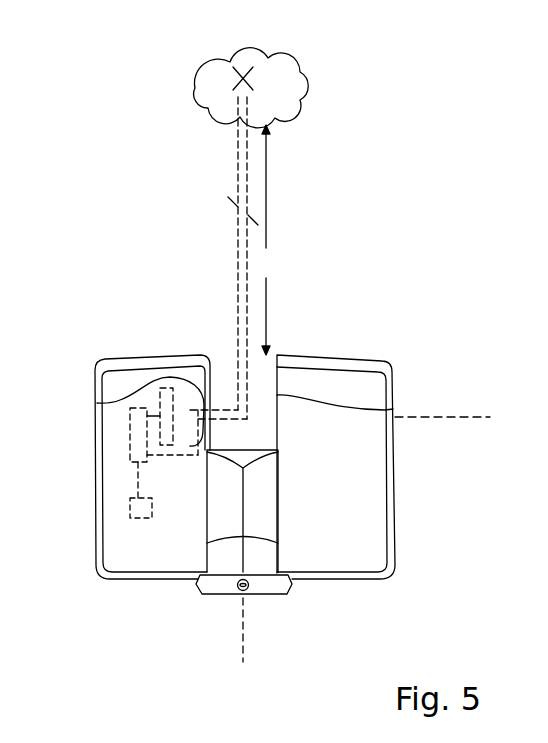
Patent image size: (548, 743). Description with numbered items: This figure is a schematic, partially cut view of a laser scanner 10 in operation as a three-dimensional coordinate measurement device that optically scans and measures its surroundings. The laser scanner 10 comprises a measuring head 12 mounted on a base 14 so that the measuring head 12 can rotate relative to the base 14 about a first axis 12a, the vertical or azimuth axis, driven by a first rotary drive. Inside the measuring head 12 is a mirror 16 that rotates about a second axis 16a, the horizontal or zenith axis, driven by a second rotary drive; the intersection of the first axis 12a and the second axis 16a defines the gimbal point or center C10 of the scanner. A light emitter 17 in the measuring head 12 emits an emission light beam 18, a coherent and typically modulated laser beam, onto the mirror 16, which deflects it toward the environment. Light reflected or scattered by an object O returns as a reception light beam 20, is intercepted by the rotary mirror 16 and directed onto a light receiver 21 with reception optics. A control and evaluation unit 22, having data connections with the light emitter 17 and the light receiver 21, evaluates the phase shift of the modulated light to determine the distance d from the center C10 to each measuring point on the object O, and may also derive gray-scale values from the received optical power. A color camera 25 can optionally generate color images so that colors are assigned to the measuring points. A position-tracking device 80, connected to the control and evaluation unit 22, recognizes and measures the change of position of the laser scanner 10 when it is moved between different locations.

The laser scanner 10 is at (126, 172).
The object O is at (310, 80).
The reception light beam 20 is at (238, 222).
The emission light beam 18 is at (248, 202).
The distance d is at (266, 240).
The measuring head 12 is at (393, 548).
The first axis 12a is at (243, 620).
The base 14 is at (210, 595).
The mirror 16 is at (264, 443).
The second axis 16a is at (448, 410).
The center C10 is at (393, 409).
The color camera 25 is at (97, 403).
The light receiver 21 is at (160, 407).
The control and evaluation unit 22 is at (130, 422).
The position-tracking device 80 is at (130, 512).
The light emitter 17 is at (277, 383).